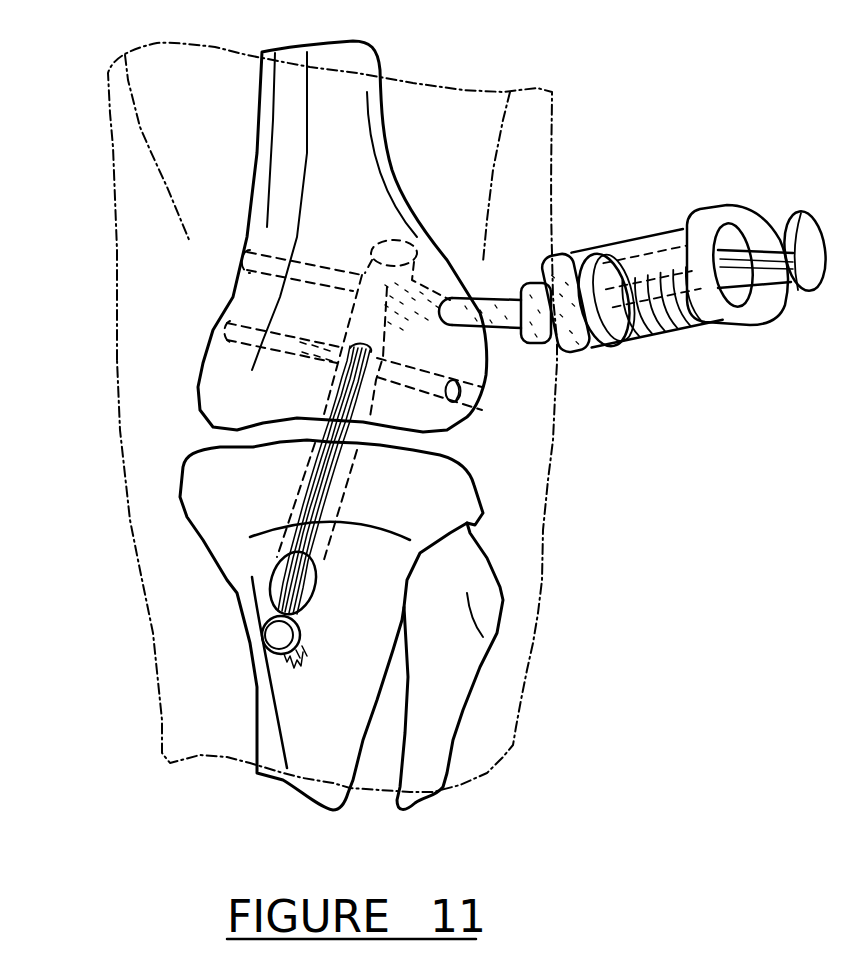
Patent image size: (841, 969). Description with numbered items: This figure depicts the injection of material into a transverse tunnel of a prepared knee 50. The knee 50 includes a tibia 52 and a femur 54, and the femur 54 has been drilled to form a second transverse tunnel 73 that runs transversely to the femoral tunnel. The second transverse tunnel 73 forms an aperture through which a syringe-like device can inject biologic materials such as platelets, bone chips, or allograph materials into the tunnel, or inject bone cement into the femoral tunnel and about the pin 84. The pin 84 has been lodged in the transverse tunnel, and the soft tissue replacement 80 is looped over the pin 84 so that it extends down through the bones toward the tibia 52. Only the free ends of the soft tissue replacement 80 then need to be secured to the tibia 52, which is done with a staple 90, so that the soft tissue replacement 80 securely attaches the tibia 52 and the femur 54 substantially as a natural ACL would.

The knee 50 is at (212, 302).
The tibia 52 is at (457, 494).
The femur 54 is at (417, 237).
The second transverse tunnel 73 is at (424, 320).
The pin 84 is at (462, 418).
The soft tissue replacement 80 is at (256, 579).
The staple 90 is at (262, 668).